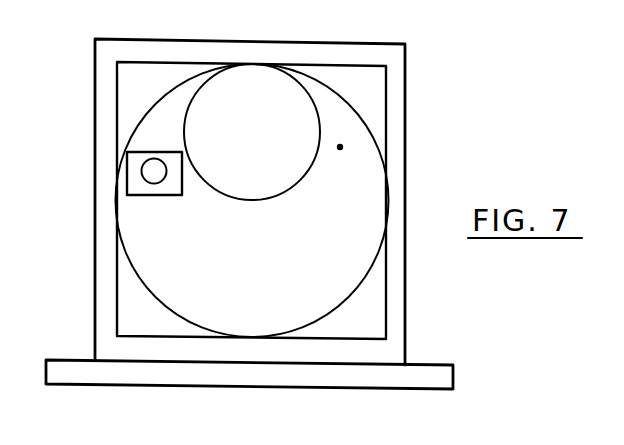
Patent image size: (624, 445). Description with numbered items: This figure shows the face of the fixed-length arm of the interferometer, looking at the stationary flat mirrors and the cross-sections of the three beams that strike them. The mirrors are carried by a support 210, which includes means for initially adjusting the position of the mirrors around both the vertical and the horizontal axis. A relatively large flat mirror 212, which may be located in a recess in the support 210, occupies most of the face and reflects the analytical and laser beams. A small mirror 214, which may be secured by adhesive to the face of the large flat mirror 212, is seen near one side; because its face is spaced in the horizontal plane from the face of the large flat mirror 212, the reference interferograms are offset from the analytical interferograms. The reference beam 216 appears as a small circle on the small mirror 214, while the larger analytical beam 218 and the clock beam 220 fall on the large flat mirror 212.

The support 210 is at (406, 78).
The large flat mirror 212 is at (358, 152).
The small mirror 214 is at (132, 181).
The reference beam 216 is at (142, 166).
The analytical beam 218 is at (300, 82).
The clock beam 220 is at (340, 147).